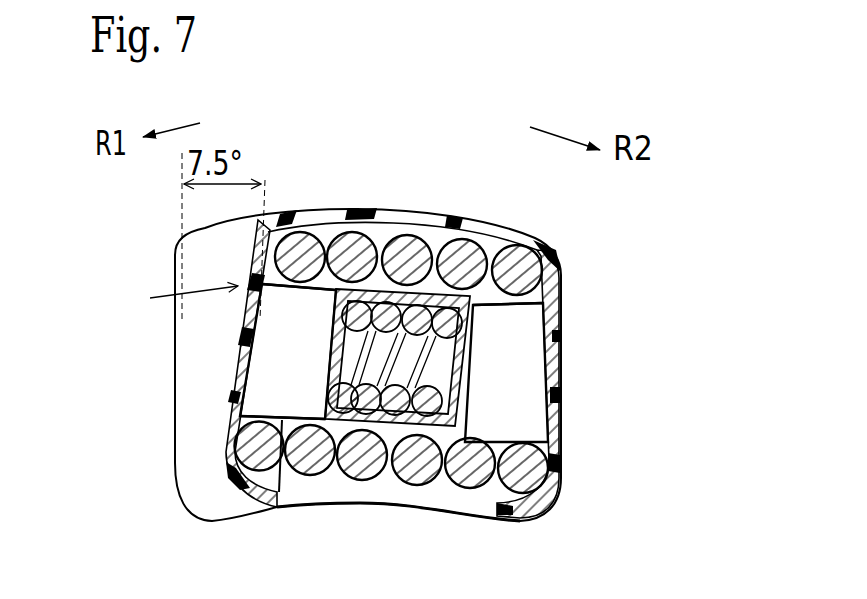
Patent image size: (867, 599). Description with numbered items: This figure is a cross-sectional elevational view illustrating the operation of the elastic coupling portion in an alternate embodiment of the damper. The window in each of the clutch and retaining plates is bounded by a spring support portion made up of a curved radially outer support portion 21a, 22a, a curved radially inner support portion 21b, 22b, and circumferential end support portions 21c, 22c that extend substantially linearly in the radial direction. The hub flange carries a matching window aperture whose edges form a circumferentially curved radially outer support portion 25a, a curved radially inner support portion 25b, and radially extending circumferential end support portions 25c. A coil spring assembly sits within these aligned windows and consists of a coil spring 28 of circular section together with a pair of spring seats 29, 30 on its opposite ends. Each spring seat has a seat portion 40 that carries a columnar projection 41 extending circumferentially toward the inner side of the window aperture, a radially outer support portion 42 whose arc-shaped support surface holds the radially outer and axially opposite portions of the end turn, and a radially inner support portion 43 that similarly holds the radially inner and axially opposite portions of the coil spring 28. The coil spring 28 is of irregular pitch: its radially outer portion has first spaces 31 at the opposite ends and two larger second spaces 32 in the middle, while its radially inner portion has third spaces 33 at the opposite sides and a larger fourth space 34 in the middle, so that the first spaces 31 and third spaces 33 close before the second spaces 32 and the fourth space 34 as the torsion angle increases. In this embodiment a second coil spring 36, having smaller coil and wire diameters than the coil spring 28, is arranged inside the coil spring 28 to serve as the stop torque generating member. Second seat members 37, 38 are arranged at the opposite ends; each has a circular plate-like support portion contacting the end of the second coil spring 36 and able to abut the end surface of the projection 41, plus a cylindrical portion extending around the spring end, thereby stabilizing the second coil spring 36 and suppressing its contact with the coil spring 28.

The radially outer support portion 21a is at (193, 210).
The radially outer support portion 22a is at (206, 231).
The radially inner support portion 21b is at (144, 510).
The radially inner support portion 22b is at (242, 512).
The circumferential end support portions 21c is at (376, 350).
The circumferential end support portions 22c is at (176, 352).
The radially outer support portion 25a is at (468, 230).
The radially inner support portion 25b is at (487, 524).
The circumferential end support portions 25c is at (252, 265).
The coil spring 28 is at (353, 232).
The spring seat 29 is at (174, 291).
The spring seat 30 is at (575, 284).
The first spaces 31 is at (323, 229).
The second spaces 32 is at (391, 234).
The third spaces 33 is at (329, 478).
The fourth space 34 is at (385, 485).
The second coil spring 36 is at (513, 422).
The second seat member 37 is at (262, 378).
The second seat member 38 is at (412, 367).
The seat portion 40 is at (250, 317).
The projection 41 is at (283, 347).
The radially outer support portion 42 is at (289, 224).
The radially inner support portion 43 is at (263, 484).